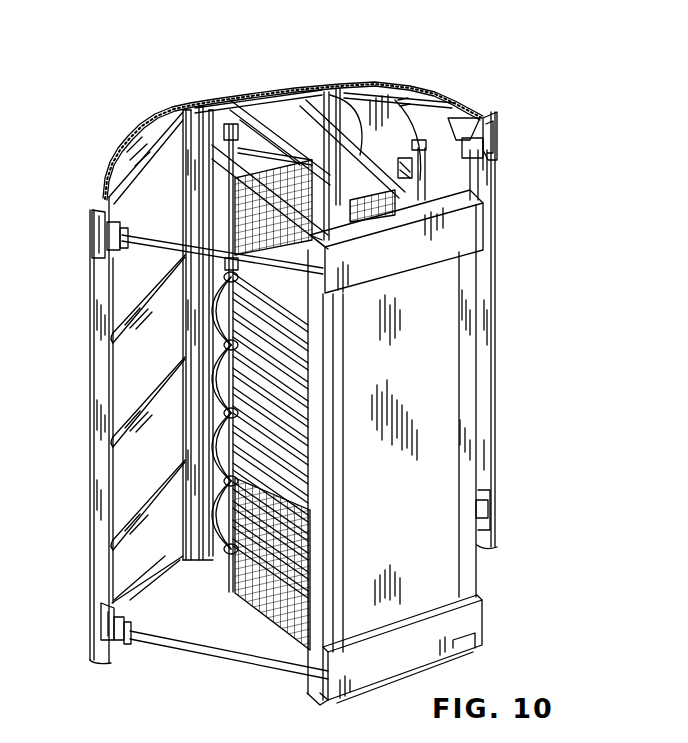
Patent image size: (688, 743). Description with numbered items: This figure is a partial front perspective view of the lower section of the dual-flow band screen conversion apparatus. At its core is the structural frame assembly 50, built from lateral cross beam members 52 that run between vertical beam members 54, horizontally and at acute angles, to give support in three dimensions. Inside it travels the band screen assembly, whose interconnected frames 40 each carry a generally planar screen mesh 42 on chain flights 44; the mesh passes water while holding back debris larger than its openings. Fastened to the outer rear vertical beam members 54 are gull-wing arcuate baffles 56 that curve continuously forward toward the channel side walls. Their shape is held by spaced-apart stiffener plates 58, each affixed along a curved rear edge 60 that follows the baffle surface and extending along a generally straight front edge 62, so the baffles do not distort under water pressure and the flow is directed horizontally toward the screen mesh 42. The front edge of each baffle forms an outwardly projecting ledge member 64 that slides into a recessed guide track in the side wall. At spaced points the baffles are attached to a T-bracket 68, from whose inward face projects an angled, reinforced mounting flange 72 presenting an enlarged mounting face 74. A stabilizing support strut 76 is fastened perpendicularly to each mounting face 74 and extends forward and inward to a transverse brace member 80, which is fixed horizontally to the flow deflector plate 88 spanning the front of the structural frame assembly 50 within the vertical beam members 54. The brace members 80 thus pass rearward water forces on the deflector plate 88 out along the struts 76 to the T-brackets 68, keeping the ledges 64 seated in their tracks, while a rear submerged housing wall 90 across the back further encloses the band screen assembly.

The interconnected frames 40 is at (250, 366).
The screen mesh 42 is at (373, 219).
The chain flights 44 is at (226, 125).
The structural frame assembly 50 is at (339, 99).
The lateral cross beam members 52 is at (262, 104).
The vertical beam members 54 is at (320, 84).
The arcuate baffles 56 is at (136, 196).
The stiffener plates 58 is at (140, 137).
The curved rear edges 60 is at (134, 377).
The straight front edge 62 is at (133, 417).
The projecting ledge member 64 is at (100, 383).
The T-bracket 68 is at (104, 236).
The mounting flange 72 is at (461, 125).
The mounting face 74 is at (492, 163).
The stabilizing support strut 76 is at (480, 183).
The transverse brace member 80 is at (478, 236).
The flow deflector plate 88 is at (383, 542).
The rear submerged housing wall 90 is at (288, 86).